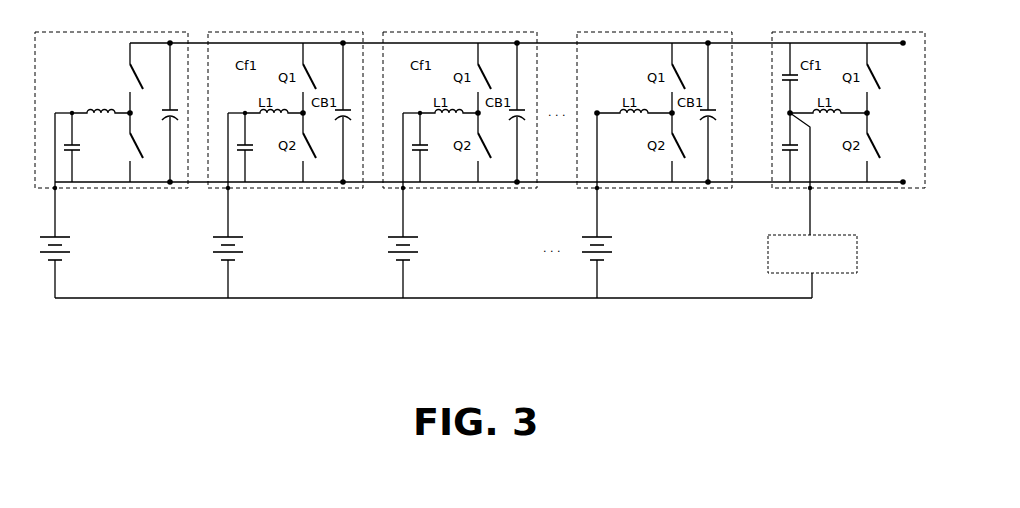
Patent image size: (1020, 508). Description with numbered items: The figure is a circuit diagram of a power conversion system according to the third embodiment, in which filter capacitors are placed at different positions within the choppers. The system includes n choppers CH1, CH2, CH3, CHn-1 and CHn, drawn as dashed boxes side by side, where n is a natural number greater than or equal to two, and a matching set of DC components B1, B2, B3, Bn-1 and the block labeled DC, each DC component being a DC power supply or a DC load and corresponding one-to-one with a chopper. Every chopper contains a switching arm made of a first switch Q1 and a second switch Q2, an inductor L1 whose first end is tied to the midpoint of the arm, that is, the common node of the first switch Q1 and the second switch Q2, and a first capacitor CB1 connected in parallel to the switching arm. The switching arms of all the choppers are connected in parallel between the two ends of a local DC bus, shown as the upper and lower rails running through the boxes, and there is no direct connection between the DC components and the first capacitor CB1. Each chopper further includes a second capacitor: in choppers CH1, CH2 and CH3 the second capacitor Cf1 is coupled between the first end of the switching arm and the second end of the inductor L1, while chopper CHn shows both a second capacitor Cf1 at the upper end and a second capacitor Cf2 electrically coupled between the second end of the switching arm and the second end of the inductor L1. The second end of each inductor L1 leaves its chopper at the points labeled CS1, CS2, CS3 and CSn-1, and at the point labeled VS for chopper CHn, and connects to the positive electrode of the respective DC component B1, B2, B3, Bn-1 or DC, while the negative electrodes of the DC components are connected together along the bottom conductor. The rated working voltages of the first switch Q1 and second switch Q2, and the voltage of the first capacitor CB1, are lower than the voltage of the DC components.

The chopper CH1 is at (111, 101).
The chopper CH2 is at (285, 101).
The chopper CH3 is at (460, 101).
The chopper CHn-1 is at (654, 101).
The chopper CHn is at (848, 101).
The second capacitor Cf1 is at (73, 120).
The second capacitor Cf2 is at (802, 147).
The first switch Q1 is at (124, 78).
The second switch Q2 is at (124, 147).
The inductor L1 is at (101, 104).
The first capacitor CB1 is at (158, 112).
The first current sensing node CS1 is at (70, 175).
The second current sensing node CS2 is at (243, 175).
The third current sensing node CS3 is at (418, 175).
The (n-1)th current sensing node CSn-1 is at (575, 175).
The DC component B1 is at (67, 267).
The DC component B2 is at (240, 267).
The DC component B3 is at (415, 267).
The DC component Bn-1 is at (613, 267).
The voltage source node VS is at (786, 174).
The DC component DC is at (812, 266).